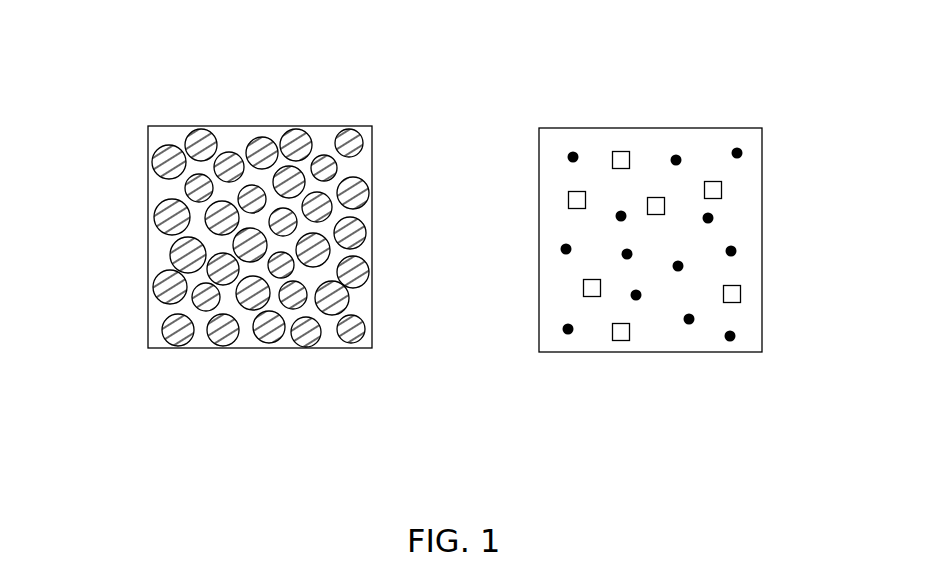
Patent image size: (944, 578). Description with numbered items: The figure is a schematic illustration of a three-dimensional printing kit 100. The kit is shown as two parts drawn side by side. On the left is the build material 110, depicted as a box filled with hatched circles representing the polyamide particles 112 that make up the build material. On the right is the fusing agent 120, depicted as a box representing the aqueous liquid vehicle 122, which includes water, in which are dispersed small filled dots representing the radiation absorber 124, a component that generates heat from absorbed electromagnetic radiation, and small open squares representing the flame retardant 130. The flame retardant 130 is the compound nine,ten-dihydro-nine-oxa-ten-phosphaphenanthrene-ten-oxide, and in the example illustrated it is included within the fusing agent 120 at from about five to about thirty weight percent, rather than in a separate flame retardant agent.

The three-dimensional printing kit 100 is at (160, 57).
The build material 110 is at (293, 269).
The polyamide particles 112 is at (337, 166).
The fusing agent 120 is at (694, 273).
The aqueous liquid vehicle 122 is at (746, 192).
The radiation absorber 124 is at (737, 252).
The flame retardant 130 is at (740, 294).